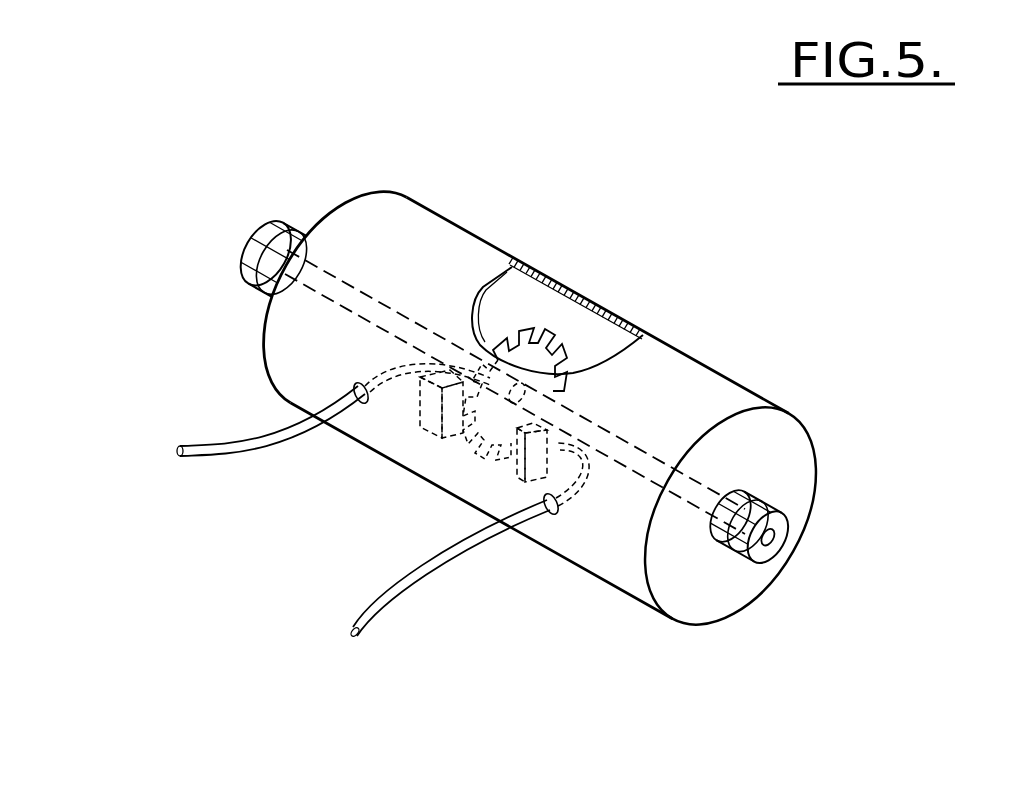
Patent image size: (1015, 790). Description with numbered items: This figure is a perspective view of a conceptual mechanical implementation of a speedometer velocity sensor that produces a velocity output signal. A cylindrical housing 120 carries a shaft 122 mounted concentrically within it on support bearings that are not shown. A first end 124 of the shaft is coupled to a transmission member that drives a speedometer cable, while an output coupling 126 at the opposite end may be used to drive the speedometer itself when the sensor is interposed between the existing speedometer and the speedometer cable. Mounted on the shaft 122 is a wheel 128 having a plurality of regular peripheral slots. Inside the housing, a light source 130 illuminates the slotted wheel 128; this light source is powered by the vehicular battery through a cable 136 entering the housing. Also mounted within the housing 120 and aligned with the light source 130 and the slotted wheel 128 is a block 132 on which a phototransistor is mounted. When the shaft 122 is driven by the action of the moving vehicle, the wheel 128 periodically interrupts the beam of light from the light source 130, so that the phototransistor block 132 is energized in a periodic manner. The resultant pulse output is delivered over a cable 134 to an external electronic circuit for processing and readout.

The cylindrical housing 120 is at (476, 236).
The shaft 122 is at (310, 284).
The first end of the shaft 124 is at (740, 543).
The output coupling 126 is at (293, 233).
The wheel 128 is at (556, 337).
The light source 130 is at (420, 417).
The block 132 is at (517, 470).
The cable 134 is at (380, 597).
The cable 136 is at (277, 438).